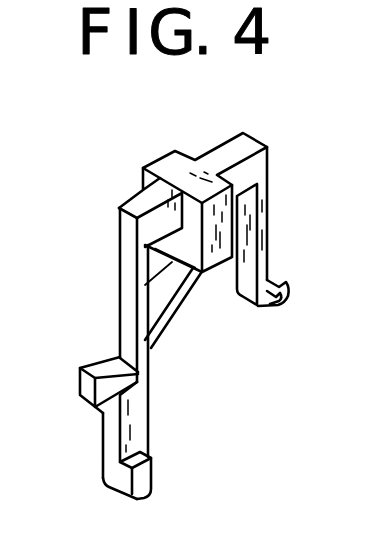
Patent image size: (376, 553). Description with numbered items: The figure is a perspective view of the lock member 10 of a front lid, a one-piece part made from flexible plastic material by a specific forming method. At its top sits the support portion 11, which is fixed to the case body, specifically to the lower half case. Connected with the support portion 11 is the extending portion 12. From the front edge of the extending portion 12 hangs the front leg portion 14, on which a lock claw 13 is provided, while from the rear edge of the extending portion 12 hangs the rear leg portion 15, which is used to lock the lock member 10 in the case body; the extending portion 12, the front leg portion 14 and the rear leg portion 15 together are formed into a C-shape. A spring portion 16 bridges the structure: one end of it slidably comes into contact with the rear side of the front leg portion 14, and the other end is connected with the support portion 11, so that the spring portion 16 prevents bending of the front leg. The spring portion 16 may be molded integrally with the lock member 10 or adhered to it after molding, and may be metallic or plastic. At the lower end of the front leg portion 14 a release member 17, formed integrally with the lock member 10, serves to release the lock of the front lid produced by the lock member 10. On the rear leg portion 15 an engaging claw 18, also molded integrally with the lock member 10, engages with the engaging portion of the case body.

The lock member 10 is at (68, 270).
The support portion 11 is at (166, 157).
The extending portion 12 is at (140, 193).
The lock claw 13 is at (80, 381).
The front leg portion 14 is at (135, 305).
The rear leg portion 15 is at (268, 237).
The spring portion 16 is at (164, 309).
The release member 17 is at (158, 482).
The engaging claw 18 is at (289, 303).